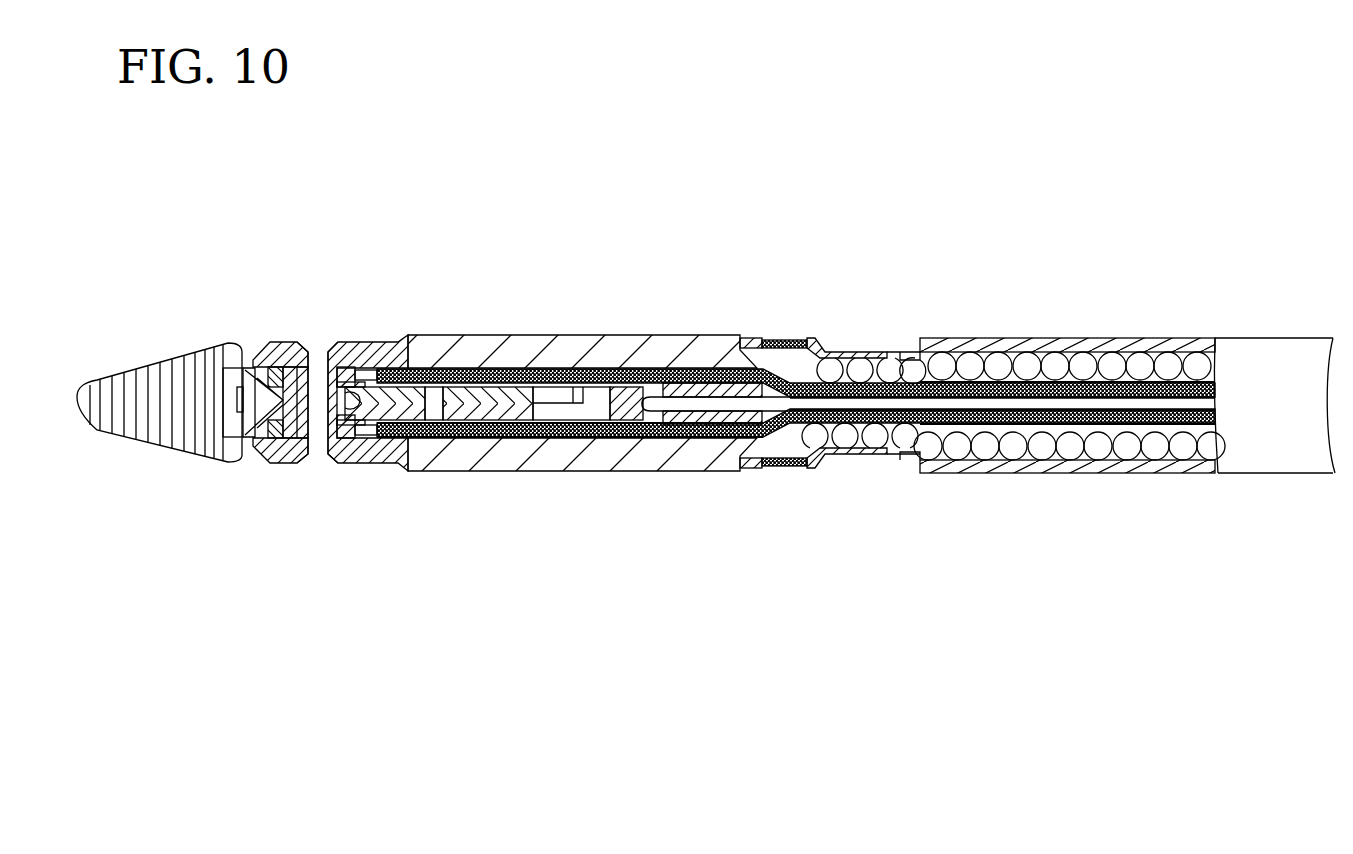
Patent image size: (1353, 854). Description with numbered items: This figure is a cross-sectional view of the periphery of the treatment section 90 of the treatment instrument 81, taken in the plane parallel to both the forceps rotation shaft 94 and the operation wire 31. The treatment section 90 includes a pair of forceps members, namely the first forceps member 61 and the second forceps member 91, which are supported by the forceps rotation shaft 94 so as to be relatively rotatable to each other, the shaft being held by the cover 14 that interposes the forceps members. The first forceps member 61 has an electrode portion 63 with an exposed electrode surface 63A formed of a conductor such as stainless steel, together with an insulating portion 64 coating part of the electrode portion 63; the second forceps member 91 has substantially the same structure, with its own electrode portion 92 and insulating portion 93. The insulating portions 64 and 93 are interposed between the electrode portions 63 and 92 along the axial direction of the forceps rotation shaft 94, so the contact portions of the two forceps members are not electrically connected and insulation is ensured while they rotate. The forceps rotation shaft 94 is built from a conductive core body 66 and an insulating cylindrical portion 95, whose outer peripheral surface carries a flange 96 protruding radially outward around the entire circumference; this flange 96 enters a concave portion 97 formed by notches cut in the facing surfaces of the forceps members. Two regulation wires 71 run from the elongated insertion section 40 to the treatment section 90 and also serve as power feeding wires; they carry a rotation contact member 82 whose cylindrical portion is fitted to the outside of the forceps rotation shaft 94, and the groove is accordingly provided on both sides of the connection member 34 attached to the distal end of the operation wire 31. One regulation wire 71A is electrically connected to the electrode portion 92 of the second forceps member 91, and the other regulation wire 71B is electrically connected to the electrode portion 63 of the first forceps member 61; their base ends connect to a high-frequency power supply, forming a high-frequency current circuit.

The treatment instrument 81 is at (960, 178).
The treatment section 90 is at (295, 277).
The electrode portion 63 is at (180, 375).
The electrode surface 63A is at (171, 360).
The flange 96 is at (258, 408).
The forceps rotation shaft 94 is at (318, 458).
The core body 66 is at (320, 355).
The electrode portion 92 is at (276, 440).
The rotation contact member 82 is at (350, 370).
The cylindrical portion 95 is at (334, 450).
The concave portion 97 is at (388, 382).
The connection member 34 is at (633, 416).
The insulating portion 64 is at (796, 357).
The first forceps member 61 is at (420, 378).
The insulating portion 93 is at (570, 479).
The second forceps member 91 is at (398, 425).
The regulation wire 71 is at (928, 433).
The regulation wire 71A is at (718, 430).
The regulation wire 71B is at (722, 378).
The operation wire 31 is at (1069, 400).
The cover 14 is at (578, 462).
The insertion section 40 is at (1209, 286).